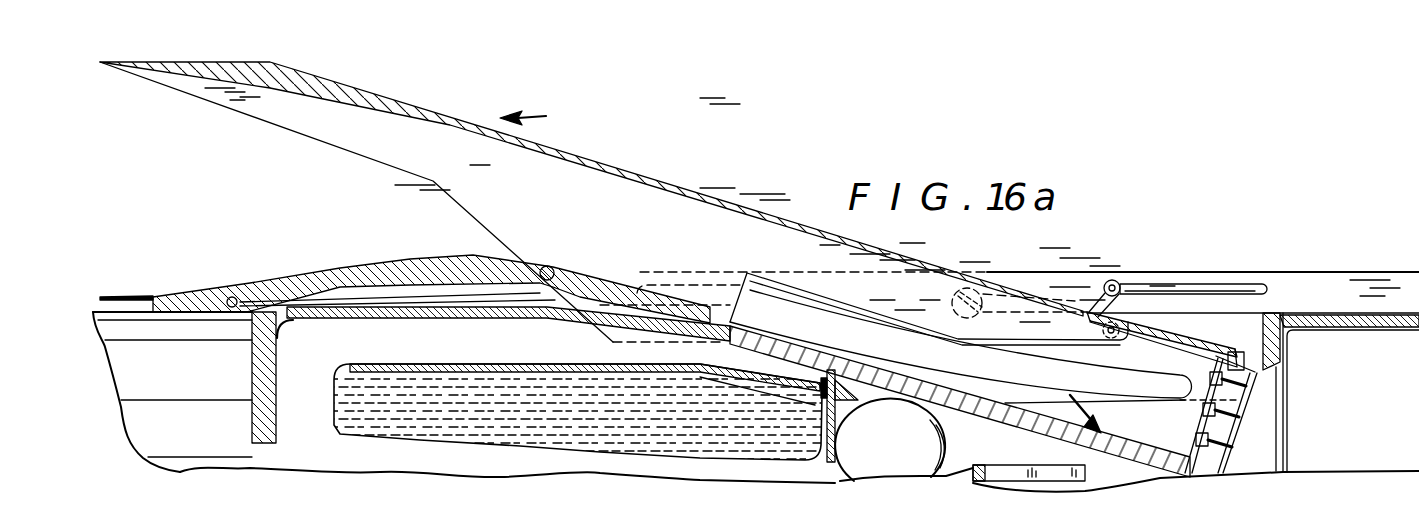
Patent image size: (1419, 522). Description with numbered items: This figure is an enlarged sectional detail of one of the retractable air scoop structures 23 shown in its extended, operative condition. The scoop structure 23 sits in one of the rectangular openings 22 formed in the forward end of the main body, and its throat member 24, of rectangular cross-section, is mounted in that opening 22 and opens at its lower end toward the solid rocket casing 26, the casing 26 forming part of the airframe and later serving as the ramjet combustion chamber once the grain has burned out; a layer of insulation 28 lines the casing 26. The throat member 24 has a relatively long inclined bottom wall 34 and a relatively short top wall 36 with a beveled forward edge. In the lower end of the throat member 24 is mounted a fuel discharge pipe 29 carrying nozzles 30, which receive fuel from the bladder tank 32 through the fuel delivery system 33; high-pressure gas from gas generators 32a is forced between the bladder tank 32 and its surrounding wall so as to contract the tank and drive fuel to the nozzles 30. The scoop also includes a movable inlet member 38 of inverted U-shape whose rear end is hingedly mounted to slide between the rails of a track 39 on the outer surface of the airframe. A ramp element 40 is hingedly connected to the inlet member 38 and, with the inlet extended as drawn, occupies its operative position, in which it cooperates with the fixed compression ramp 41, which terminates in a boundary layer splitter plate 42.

The rectangular opening 22 is at (255, 455).
The retractable air scoop structure 23 is at (541, 117).
The throat member 24 is at (961, 353).
The solid rocket casing 26 is at (1350, 310).
The layer of insulation 28 is at (1343, 324).
The fuel discharge pipe 29 is at (1243, 427).
The nozzle 30 is at (1195, 430).
The bladder tank 32 is at (348, 372).
The gas generator 32a is at (905, 446).
The fuel delivery system 33 is at (1035, 465).
The inclined bottom wall 34 is at (953, 396).
The top wall 36 is at (1202, 338).
The movable inlet member 38 is at (618, 167).
The track 39 is at (1350, 272).
The ramp element 40 is at (470, 253).
The fixed compression ramp 41 is at (205, 290).
The boundary layer splitter plate 42 is at (121, 295).